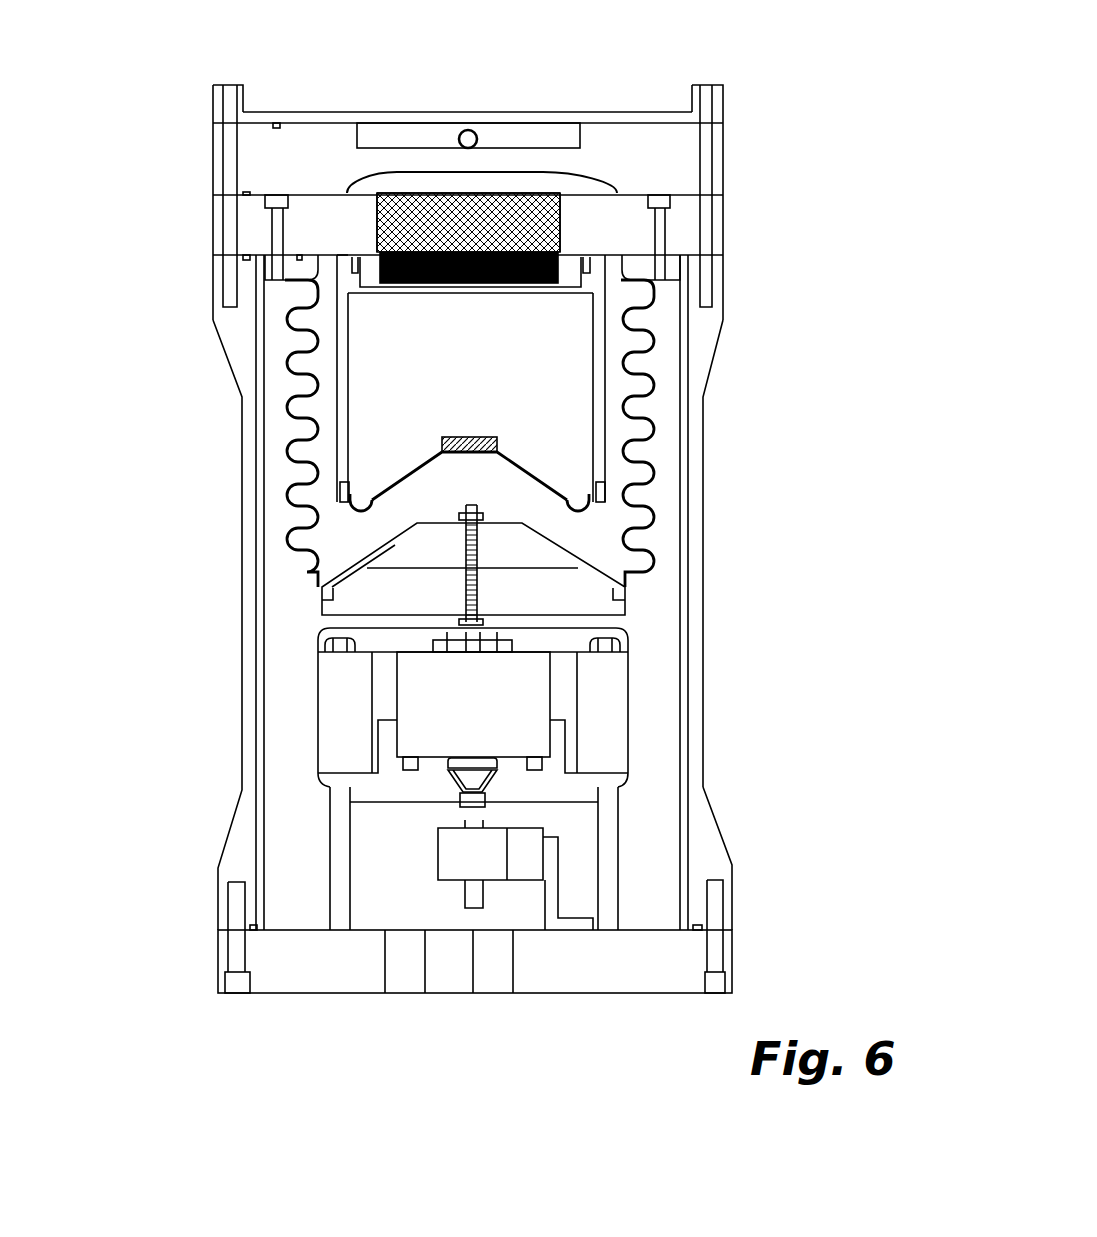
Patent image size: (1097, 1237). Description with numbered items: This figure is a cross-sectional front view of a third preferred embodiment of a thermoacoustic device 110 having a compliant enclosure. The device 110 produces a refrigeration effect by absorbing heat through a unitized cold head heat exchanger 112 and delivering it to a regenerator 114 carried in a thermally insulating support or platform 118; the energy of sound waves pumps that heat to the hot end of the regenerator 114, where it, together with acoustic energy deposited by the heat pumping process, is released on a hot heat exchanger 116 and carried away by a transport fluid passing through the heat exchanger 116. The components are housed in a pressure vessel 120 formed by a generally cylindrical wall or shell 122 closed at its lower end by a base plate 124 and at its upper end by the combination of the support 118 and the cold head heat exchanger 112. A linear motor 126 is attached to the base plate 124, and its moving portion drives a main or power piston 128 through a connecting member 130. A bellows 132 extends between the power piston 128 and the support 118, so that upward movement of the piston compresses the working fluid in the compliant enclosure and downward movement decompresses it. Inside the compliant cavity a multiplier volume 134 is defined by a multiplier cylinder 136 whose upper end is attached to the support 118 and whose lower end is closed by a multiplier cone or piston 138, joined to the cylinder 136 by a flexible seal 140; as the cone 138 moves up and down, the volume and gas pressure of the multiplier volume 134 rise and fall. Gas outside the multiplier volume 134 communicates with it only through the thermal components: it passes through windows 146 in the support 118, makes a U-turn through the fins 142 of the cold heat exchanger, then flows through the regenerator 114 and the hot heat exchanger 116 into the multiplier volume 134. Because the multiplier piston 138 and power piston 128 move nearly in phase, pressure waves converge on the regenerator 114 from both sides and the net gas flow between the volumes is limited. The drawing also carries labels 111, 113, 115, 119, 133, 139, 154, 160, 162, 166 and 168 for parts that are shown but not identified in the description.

The thermoacoustic device 110 is at (752, 70).
The cover plate 111 is at (535, 135).
The unitized cold head heat exchanger 112 is at (198, 158).
The mesh screen 113 is at (432, 215).
The regenerator 114 is at (562, 235).
The screen layer 115 is at (488, 215).
The hot heat exchanger 116 is at (502, 283).
The support or platform 118 is at (640, 227).
The screen edge 119 is at (376, 215).
The pressure vessel 120 is at (718, 567).
The cylindrical wall or shell 122 is at (705, 837).
The base plate 124 is at (263, 958).
The linear motor 126 is at (605, 738).
The power piston 128 is at (395, 545).
The connecting member 130 is at (480, 578).
The bellows 132 is at (658, 553).
The spacer block 133 is at (300, 277).
The multiplier volume 134 is at (405, 330).
The multiplier cylinder 136 is at (343, 397).
The multiplier cone or piston 138 is at (537, 478).
The center plate 139 is at (480, 437).
The flexible seal 140 is at (365, 505).
The fins of the cold heat exchanger 142 is at (557, 183).
The windows 146 is at (338, 217).
The fastener 154 is at (275, 255).
The base block 160 is at (492, 983).
The base block 162 is at (407, 975).
The nut 166 is at (348, 131).
The top plate 168 is at (487, 113).